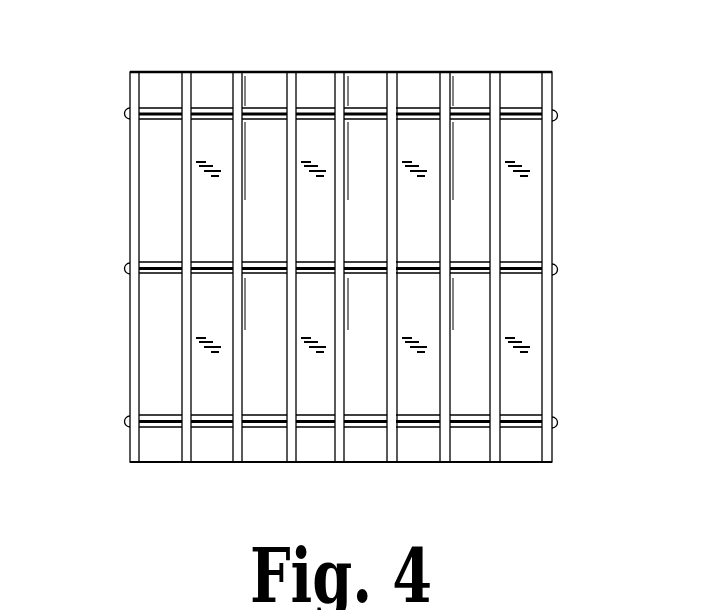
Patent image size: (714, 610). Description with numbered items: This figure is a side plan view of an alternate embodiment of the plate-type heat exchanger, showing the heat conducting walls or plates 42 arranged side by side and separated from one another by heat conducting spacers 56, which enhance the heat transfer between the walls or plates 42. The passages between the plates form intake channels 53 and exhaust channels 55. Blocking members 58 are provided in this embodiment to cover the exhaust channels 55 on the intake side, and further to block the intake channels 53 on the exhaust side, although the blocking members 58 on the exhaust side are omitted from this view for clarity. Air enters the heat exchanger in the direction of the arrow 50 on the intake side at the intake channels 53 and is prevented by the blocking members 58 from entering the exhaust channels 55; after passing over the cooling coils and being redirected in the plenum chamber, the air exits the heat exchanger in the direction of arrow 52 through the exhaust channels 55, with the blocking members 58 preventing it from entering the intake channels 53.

The arrow 50 is at (332, 265).
The blocking members 58 is at (160, 71).
The heat conducting spacers 56 is at (520, 110).
The arrow 52 is at (163, 214).
The heat conducting walls 42 is at (553, 172).
The exhaust channels 55 is at (163, 380).
The intake channels 53 is at (208, 443).